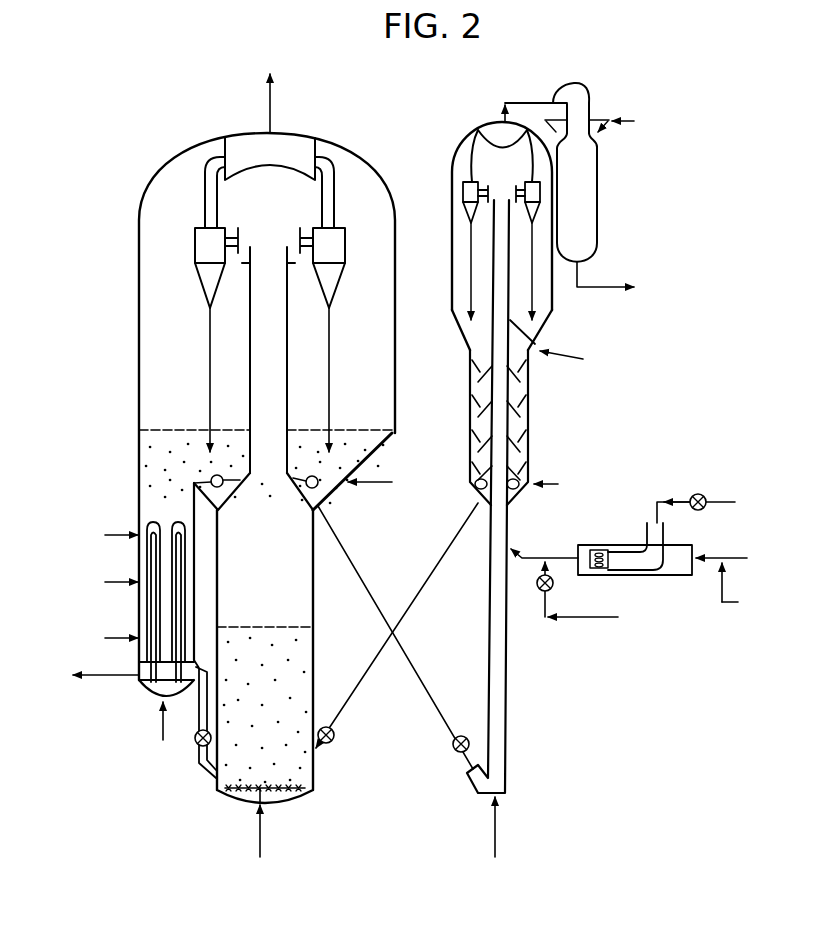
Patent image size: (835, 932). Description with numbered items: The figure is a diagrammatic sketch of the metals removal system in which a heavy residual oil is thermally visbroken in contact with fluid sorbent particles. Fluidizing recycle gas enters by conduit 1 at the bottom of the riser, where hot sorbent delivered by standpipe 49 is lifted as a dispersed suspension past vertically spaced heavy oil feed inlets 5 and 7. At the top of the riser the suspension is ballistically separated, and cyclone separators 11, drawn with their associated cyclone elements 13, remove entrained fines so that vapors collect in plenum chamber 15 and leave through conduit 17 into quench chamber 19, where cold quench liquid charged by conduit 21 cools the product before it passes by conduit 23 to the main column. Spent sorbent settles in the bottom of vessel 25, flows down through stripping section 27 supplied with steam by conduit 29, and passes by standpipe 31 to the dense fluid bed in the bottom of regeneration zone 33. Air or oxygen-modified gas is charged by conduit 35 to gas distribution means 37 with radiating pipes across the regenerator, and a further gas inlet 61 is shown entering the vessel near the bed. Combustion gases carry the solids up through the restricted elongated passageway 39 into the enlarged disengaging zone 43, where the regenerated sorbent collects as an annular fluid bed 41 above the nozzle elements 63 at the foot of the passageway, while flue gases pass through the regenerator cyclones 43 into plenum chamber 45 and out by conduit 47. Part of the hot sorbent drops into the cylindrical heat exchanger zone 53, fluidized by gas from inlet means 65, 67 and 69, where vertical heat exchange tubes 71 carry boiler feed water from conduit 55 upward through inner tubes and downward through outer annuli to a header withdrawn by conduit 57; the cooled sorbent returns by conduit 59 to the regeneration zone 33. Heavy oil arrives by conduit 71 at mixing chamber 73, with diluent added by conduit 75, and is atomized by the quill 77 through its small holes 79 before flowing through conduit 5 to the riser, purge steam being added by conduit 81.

The conduit 1 is at (496, 852).
The heavy oil feed inlet 5 is at (520, 551).
The feed inlet means 7 is at (553, 362).
The cyclone separators 11 is at (525, 185).
The cyclone separator 13 is at (463, 192).
The plenum chamber 15 is at (493, 137).
The conduit 17 is at (527, 102).
The quench zone or chamber 19 is at (590, 191).
The conduit 21 is at (626, 120).
The conduit 23 is at (606, 286).
The vessel 25 is at (552, 306).
The stripping section or zone 27 is at (530, 400).
The conduit 29 is at (558, 484).
The standpipe 31 is at (450, 547).
The regeneration zone 33 is at (316, 652).
The conduit 35 is at (262, 832).
The gas distribution means 37 is at (295, 791).
The restricted elongated passageway 39 is at (257, 461).
The annular fluid bed 41 is at (192, 477).
The enlarged disengaging zone and cyclones 43 is at (139, 373).
The plenum chamber 45 is at (287, 161).
The conduit 47 is at (271, 113).
The standpipe 49 is at (442, 712).
The heat exchanger zone 53 is at (137, 563).
The conduit 55 is at (162, 718).
The conduit 57 is at (108, 677).
The conduit 59 is at (197, 748).
The air inlet 61 is at (352, 486).
The catalyst distributor nozzle 63 is at (219, 488).
The inlet means 65 is at (105, 638).
The inlet means 67 is at (105, 582).
The inlet means 69 is at (105, 535).
The heat exchange tubes 71 is at (182, 522).
The mixing chamber 73 is at (680, 546).
The conduit 75 is at (738, 602).
The quill 77 is at (648, 541).
The holes 79 is at (600, 570).
The conduit 81 is at (563, 618).